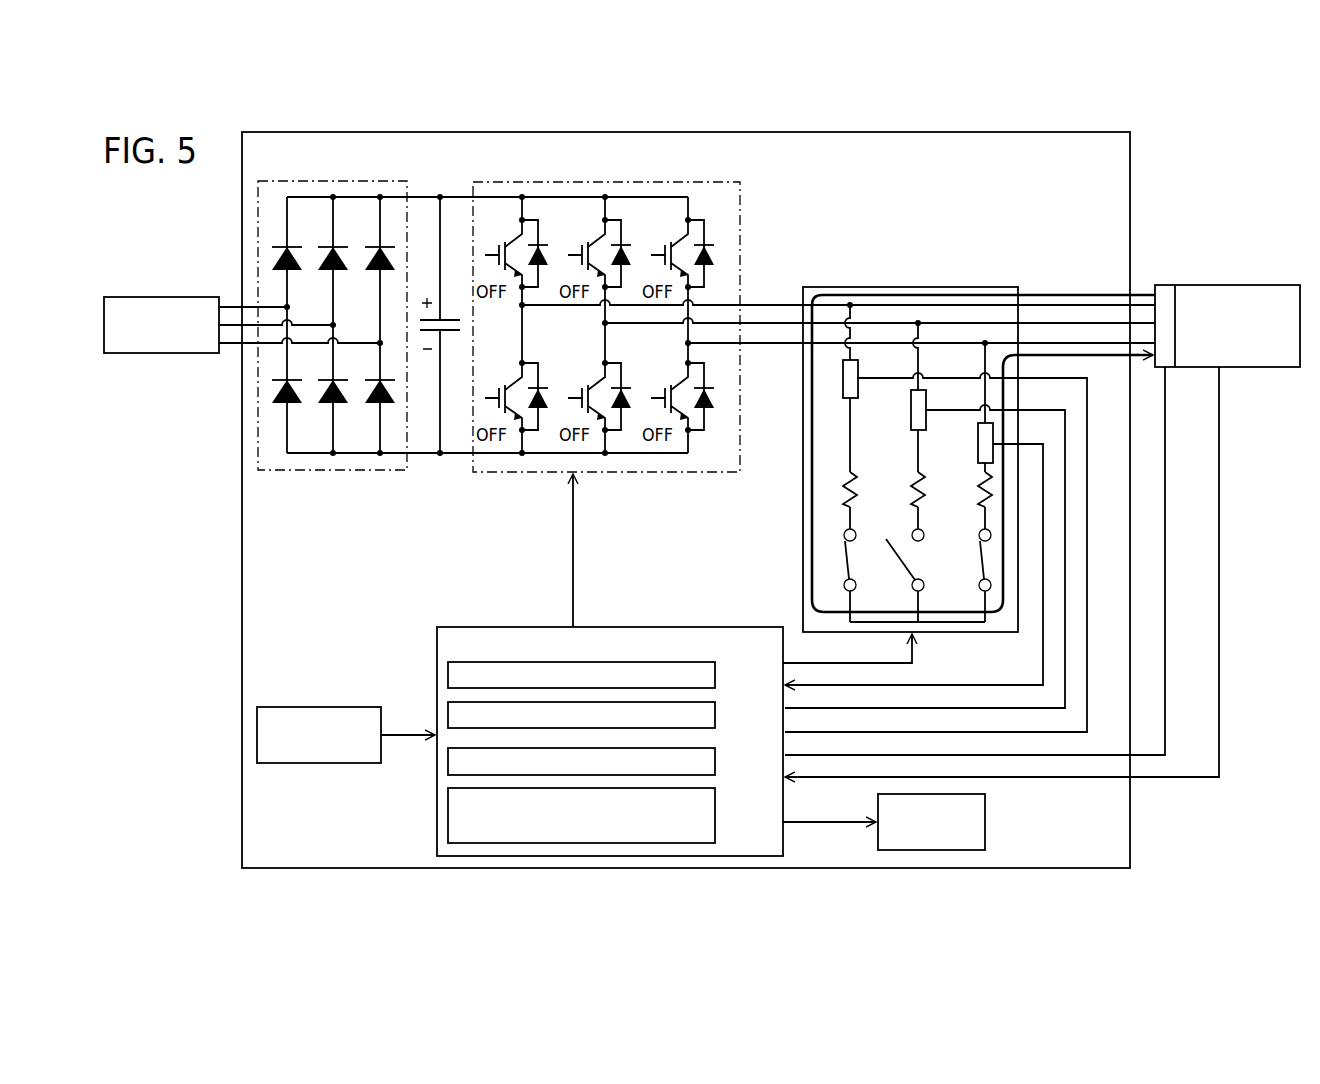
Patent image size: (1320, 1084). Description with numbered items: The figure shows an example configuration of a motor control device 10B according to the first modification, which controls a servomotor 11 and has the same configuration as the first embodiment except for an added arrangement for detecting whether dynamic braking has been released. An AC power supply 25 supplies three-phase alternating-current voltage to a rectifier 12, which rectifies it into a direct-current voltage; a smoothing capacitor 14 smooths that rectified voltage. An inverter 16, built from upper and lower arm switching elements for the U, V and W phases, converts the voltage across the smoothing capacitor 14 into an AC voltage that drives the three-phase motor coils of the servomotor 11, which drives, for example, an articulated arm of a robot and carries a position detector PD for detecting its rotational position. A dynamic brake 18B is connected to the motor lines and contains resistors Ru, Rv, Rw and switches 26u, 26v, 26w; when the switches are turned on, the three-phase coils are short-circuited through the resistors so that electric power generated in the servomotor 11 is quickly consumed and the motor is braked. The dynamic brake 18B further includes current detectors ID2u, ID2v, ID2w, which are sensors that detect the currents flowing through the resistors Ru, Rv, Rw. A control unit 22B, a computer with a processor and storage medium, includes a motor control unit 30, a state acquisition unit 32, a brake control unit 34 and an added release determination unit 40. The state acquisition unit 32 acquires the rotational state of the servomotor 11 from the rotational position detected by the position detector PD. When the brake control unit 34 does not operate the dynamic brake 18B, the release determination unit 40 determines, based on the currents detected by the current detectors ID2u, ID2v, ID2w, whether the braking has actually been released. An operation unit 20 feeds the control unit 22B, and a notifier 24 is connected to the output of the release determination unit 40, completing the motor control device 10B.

The motor control device 10B is at (1131, 160).
The AC power supply 25 is at (161, 297).
The rectifier 12 is at (358, 181).
The smoothing capacitor 14 is at (452, 339).
The inverter 16 is at (797, 333).
The dynamic brake 18B is at (881, 439).
The current detector ID2u is at (843, 372).
The current detector ID2v is at (910, 400).
The current detector ID2w is at (978, 440).
The resistor Ru is at (843, 488).
The resistor Rv is at (910, 480).
The resistor Rw is at (977, 480).
The switch 26u is at (838, 553).
The switch 26v is at (889, 554).
The switch 26w is at (969, 549).
The position detector PD is at (1163, 284).
The servomotor 11 is at (1218, 284).
The operation unit 20 is at (297, 706).
The control unit 22B is at (725, 614).
The motor control unit 30 is at (716, 673).
The state acquisition unit 32 is at (716, 713).
The brake control unit 34 is at (716, 757).
The release determination unit 40 is at (716, 813).
The notifier 24 is at (986, 822).